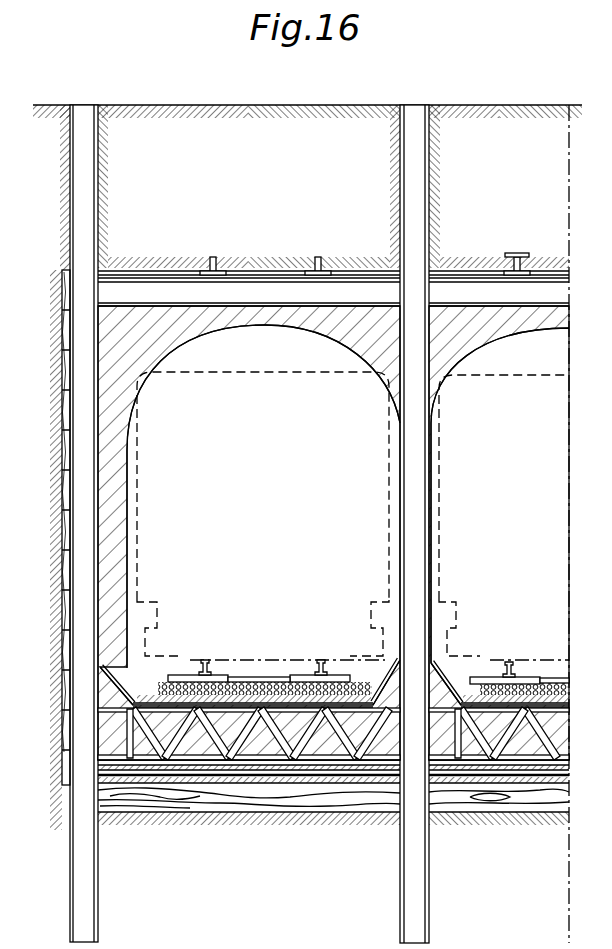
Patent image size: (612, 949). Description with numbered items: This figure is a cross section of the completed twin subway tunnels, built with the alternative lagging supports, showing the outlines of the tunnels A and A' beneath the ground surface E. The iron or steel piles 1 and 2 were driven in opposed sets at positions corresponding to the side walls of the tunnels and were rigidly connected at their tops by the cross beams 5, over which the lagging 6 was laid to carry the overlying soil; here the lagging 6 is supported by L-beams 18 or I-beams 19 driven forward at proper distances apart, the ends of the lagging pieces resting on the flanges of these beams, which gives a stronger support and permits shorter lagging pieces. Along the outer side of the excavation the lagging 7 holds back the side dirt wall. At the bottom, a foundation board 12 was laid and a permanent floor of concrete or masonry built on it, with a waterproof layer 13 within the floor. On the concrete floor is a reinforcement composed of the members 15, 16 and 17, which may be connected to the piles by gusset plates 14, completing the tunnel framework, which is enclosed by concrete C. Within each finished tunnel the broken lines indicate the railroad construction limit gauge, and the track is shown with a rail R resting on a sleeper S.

The pile 1 is at (88, 187).
The pile 2 is at (418, 157).
The cross beam 5 is at (268, 397).
The lagging 6 is at (345, 270).
The lagging 7 is at (62, 470).
The foundation board 12 is at (323, 808).
The waterproof layer 13 is at (378, 783).
The gusset plate 14 is at (333, 761).
The reinforcement member 15 is at (388, 692).
The reinforcement member 16 is at (277, 765).
The reinforcement member 17 is at (215, 740).
The L-beam 18 is at (212, 256).
The I-beam 19 is at (516, 253).
The ground surface E is at (276, 105).
The tunnel outline A is at (263, 496).
The tunnel outline A' is at (500, 495).
The concrete C is at (139, 388).
The sleeper S is at (181, 675).
The rail R is at (206, 660).